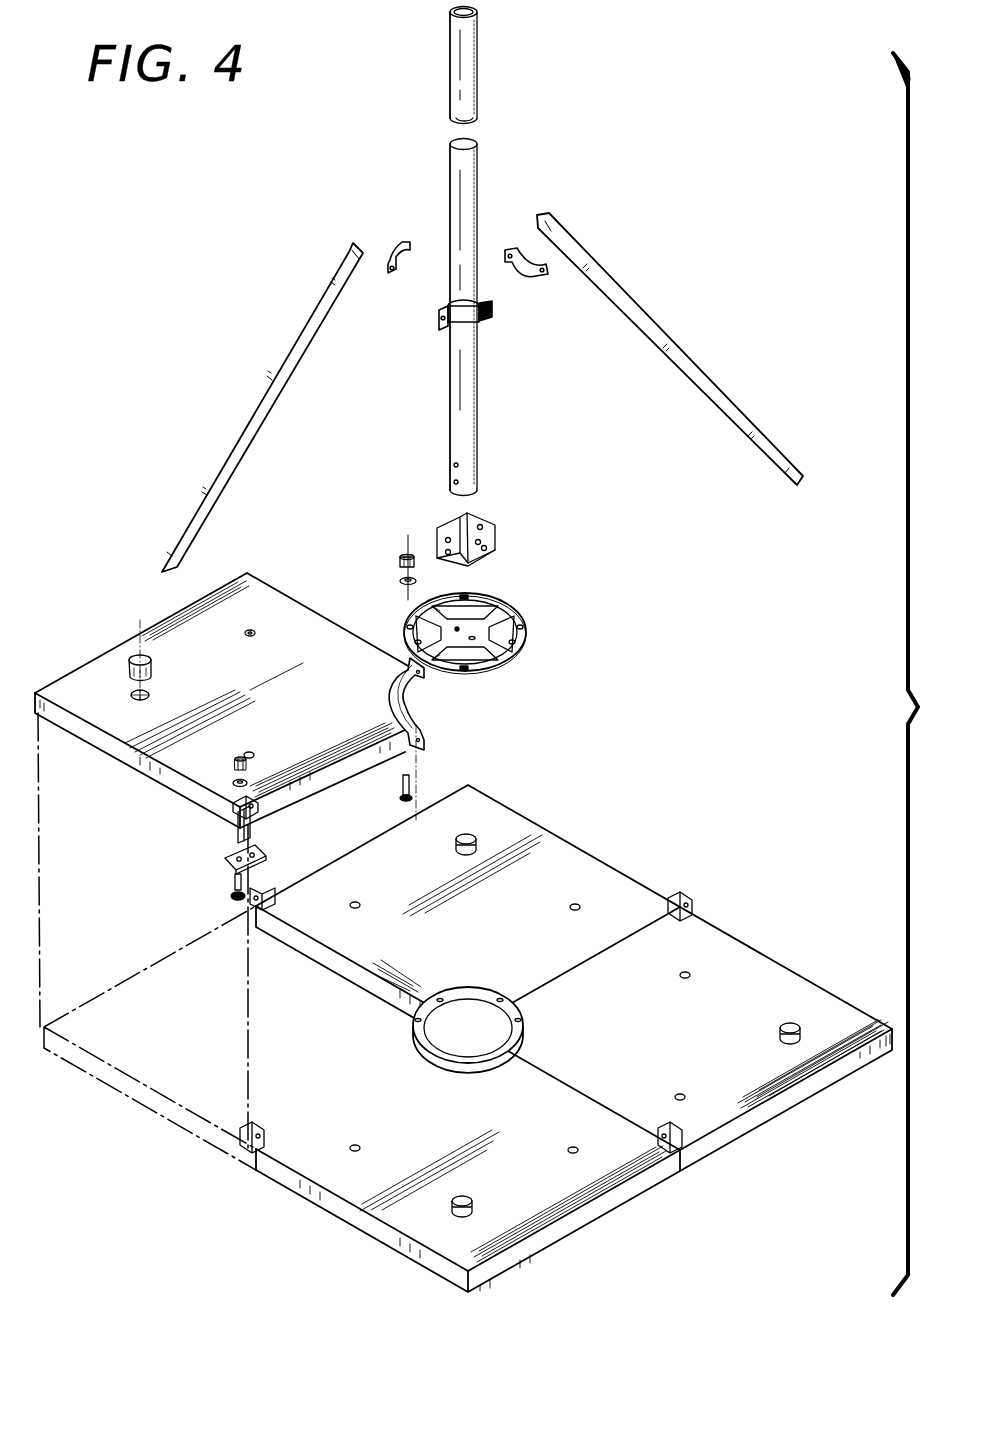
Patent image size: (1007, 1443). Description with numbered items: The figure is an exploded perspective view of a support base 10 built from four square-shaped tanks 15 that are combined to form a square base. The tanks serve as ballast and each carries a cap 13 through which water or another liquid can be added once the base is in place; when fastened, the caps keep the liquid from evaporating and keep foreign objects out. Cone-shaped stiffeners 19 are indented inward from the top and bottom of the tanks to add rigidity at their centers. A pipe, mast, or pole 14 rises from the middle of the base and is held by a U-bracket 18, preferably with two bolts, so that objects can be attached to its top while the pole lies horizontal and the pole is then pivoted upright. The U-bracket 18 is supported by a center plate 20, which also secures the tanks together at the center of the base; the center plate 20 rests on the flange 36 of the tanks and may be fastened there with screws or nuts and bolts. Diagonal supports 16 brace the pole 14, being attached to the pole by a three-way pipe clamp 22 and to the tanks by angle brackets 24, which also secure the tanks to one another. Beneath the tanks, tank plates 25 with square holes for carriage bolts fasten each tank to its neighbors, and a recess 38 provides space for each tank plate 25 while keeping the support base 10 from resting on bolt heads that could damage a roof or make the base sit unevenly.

The support base 10 is at (232, 368).
The cap 13 is at (135, 657).
The pole 14 is at (478, 78).
The square-shaped tanks 15 is at (345, 605).
The diagonal supports 16 is at (238, 432).
The U-bracket 18 is at (496, 538).
The stiffeners 19 is at (250, 630).
The center plate 20 is at (526, 630).
The three-way pipe clamp 22 is at (492, 312).
The angle brackets 24 is at (262, 800).
The tank plates 25 is at (225, 858).
The flange 36 is at (418, 728).
The recess 38 is at (236, 828).